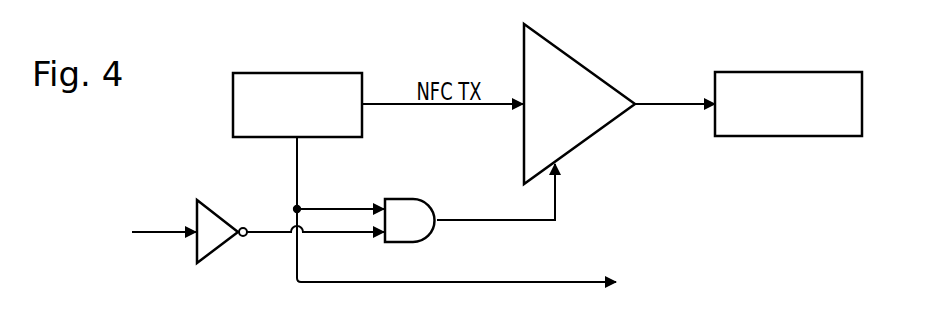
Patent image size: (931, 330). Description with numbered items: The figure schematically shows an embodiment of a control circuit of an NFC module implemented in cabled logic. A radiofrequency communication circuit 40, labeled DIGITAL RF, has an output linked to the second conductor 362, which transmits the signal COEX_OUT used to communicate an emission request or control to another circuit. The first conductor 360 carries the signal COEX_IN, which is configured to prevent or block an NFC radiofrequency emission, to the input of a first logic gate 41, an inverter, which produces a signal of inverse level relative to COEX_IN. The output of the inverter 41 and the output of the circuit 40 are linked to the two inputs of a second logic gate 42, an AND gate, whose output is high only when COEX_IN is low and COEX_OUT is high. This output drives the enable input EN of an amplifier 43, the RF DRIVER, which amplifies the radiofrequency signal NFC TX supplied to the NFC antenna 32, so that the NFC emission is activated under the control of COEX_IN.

The radiofrequency communication circuit 40 is at (287, 72).
The first logic gate 41 is at (222, 215).
The second logic gate 42 is at (404, 198).
The amplifier 43 is at (579, 62).
The NFC antenna 32 is at (789, 72).
The first conductor 360 is at (157, 236).
The second conductor 362 is at (497, 282).